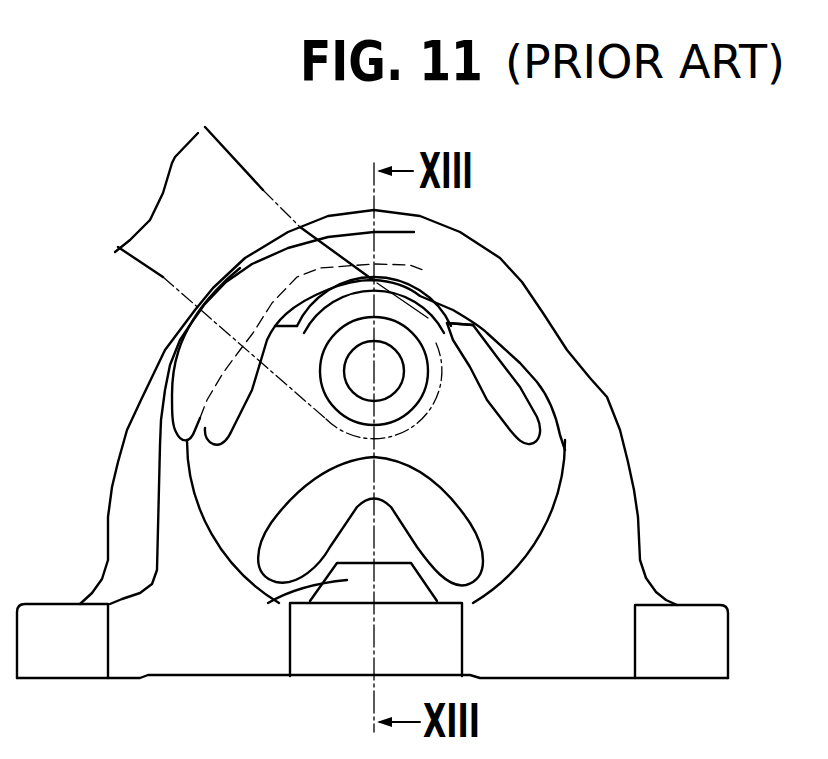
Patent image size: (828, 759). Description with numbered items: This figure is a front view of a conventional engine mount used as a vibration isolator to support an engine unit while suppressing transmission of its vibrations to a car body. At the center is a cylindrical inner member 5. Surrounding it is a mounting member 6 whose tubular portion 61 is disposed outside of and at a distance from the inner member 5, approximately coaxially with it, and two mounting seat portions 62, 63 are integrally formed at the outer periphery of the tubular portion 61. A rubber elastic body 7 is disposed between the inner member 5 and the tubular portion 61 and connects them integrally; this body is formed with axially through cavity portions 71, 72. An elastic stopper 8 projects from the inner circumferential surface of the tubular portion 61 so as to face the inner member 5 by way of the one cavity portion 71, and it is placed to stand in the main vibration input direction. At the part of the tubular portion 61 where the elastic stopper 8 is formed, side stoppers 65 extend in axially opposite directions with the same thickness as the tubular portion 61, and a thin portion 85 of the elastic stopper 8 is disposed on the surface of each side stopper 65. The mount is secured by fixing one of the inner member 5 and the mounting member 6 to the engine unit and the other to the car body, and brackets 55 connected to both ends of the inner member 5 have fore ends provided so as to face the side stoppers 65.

The inner member 5 is at (397, 338).
The mounting member 6 is at (645, 478).
The rubber elastic body 7 is at (518, 470).
The elastic stopper 8 is at (318, 546).
The bracket 55 is at (258, 273).
The tubular portion 61 is at (516, 303).
The mounting seat portion 62 is at (59, 655).
The mounting seat portion 63 is at (681, 660).
The side stopper 65 is at (327, 652).
The cavity portion 71 is at (470, 575).
The cavity portion 72 is at (497, 397).
The thin portion 85 is at (280, 596).